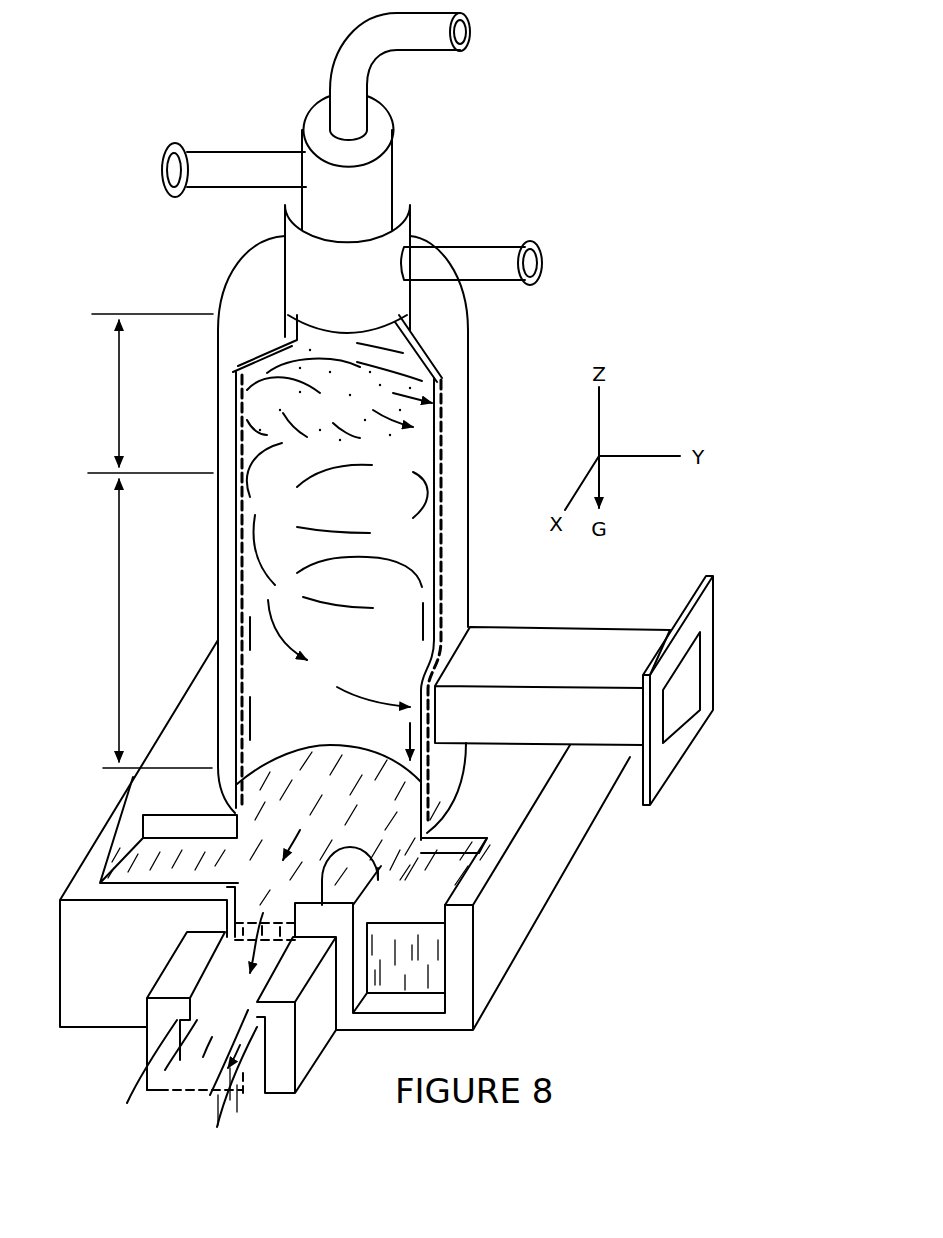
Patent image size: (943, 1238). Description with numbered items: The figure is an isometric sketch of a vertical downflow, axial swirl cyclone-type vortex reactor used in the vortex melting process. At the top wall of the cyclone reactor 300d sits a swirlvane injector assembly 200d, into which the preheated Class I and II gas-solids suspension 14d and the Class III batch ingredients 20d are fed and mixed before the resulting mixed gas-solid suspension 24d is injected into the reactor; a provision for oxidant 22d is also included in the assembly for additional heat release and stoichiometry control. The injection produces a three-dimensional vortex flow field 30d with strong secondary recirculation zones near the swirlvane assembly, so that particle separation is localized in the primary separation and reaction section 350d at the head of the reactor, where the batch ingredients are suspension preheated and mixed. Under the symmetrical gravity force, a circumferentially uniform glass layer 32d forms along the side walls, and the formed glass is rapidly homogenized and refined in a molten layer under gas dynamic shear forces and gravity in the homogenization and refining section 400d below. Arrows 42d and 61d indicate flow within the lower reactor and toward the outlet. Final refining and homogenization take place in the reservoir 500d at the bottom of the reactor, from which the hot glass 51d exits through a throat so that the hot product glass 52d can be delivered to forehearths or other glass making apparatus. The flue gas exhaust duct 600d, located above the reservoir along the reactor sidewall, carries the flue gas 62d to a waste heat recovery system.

The preheated gas-solids suspension 14d is at (150, 162).
The Class III batch ingredients 20d is at (478, 31).
The oxidant 22d is at (555, 263).
The swirlvane injector assembly 200d is at (416, 192).
The cyclone reactor 300d is at (474, 354).
The mixed gas-solid suspension 24d is at (345, 389).
The vortex flow field 30d is at (330, 398).
The glass layer 32d is at (337, 551).
The primary separation and reaction section 350d is at (145, 393).
The homogenization and refining section 400d is at (145, 623).
The downward wall flow 42d is at (336, 681).
The flow toward outlet 61d is at (373, 692).
The flue gas exhaust duct 600d is at (574, 690).
The flue gas 62d is at (682, 678).
The reservoir 500d is at (338, 825).
The hot glass 51d is at (265, 928).
The hot product glass 52d is at (192, 1068).